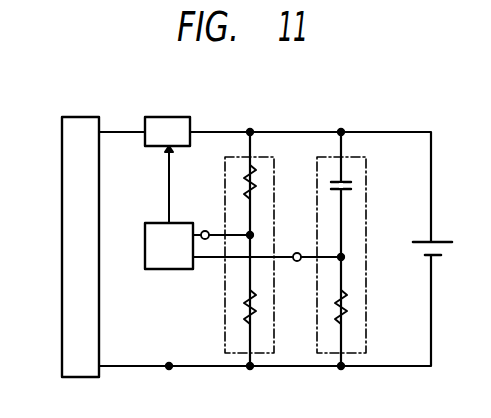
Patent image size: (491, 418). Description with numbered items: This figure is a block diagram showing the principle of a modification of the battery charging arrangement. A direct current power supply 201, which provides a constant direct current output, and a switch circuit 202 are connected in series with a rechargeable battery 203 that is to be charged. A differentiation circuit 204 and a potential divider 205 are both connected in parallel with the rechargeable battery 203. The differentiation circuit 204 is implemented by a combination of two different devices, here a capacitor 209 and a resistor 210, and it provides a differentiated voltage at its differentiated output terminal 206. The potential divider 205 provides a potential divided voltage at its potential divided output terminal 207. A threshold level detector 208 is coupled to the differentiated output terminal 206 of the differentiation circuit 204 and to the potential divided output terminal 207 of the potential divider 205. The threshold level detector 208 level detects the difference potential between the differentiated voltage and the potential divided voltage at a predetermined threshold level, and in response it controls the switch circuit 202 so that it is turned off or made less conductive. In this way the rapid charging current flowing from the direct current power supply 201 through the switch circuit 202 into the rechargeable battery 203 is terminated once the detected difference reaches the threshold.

The direct current power supply 201 is at (66, 265).
The switch circuit 202 is at (167, 117).
The rechargeable battery 203 is at (444, 250).
The differentiation circuit 204 is at (355, 157).
The potential divider 205 is at (268, 157).
The differentiated output terminal 206 is at (297, 261).
The potential divided output terminal 207 is at (205, 231).
The threshold level detector 208 is at (155, 268).
The capacitor 209 is at (347, 191).
The resistor 210 is at (348, 318).